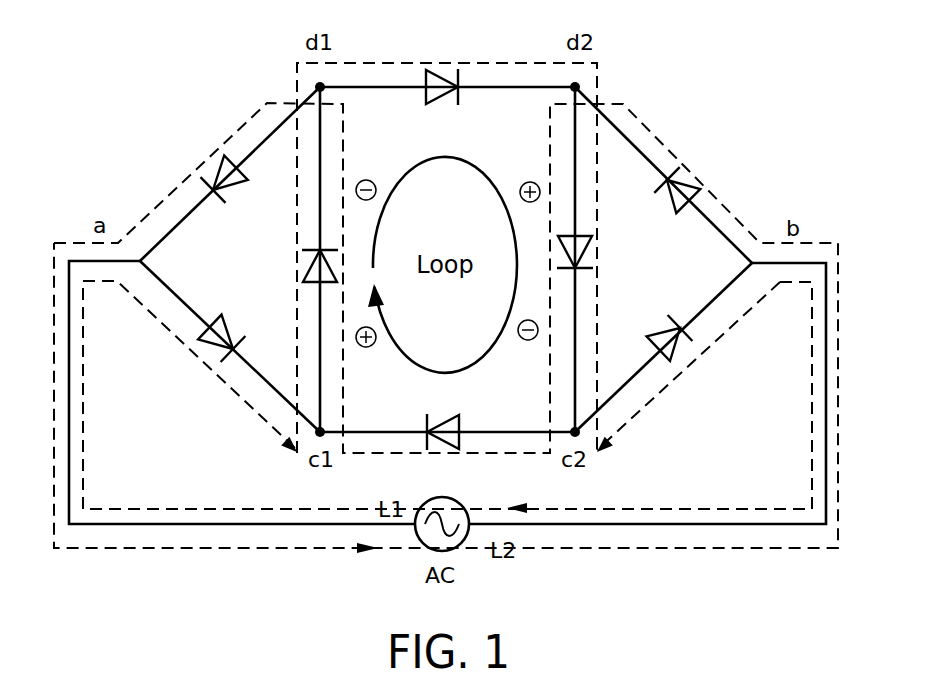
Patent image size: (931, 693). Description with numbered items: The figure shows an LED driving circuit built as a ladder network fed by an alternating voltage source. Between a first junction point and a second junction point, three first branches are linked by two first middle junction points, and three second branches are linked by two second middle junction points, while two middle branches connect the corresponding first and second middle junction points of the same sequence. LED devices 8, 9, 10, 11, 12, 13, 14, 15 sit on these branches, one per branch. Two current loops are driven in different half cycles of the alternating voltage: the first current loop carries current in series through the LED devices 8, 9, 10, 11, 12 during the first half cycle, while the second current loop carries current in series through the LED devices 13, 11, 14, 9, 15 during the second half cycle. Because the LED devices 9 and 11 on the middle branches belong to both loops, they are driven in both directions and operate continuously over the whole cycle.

The LED device 8 is at (217, 345).
The LED device 9 is at (317, 253).
The LED device 10 is at (453, 70).
The LED device 11 is at (595, 250).
The LED device 12 is at (683, 368).
The LED device 13 is at (697, 177).
The LED device 14 is at (450, 450).
The LED device 15 is at (210, 160).